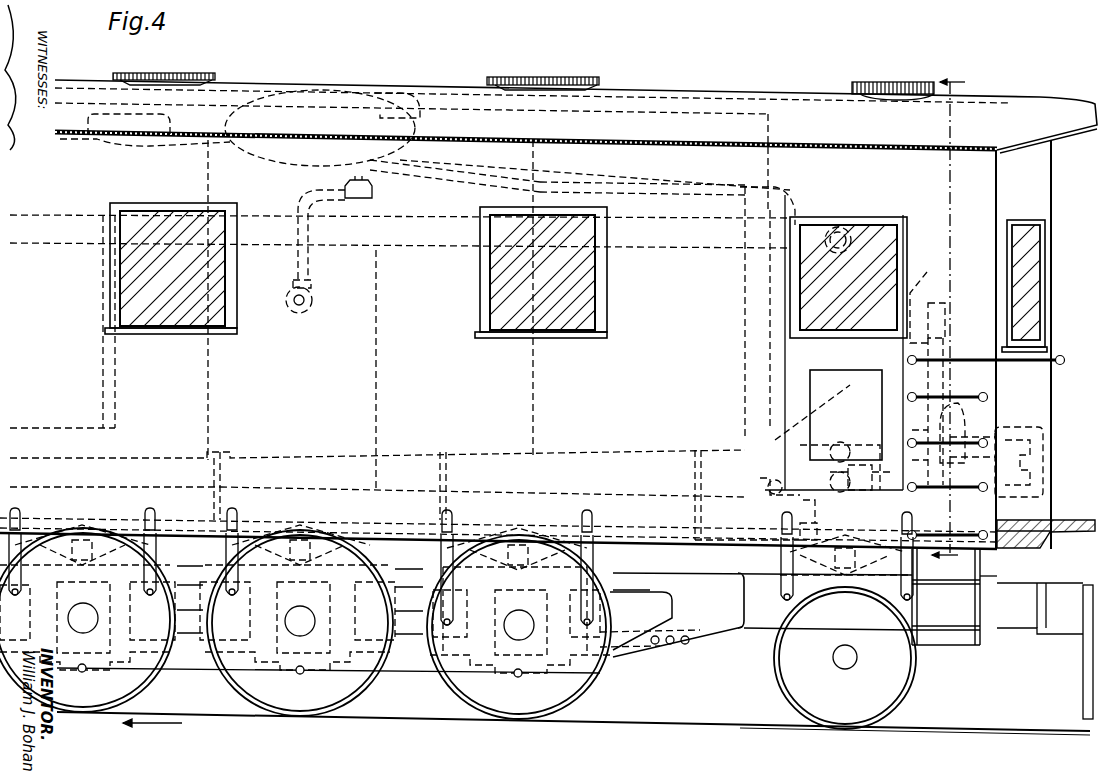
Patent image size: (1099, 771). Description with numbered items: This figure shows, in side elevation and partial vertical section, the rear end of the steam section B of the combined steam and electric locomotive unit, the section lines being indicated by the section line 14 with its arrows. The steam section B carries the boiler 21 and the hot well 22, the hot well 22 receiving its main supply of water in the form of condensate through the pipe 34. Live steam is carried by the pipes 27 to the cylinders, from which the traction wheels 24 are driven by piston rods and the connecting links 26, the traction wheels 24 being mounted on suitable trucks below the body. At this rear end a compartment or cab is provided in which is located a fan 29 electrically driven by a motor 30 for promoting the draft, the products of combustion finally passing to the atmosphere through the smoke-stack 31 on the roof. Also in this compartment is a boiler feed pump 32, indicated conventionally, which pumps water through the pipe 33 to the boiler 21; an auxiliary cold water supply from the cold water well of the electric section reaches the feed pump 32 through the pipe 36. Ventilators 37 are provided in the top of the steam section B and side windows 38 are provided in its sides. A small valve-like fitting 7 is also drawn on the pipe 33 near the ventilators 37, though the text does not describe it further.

The boiler 21 is at (52, 136).
The hot well 22 is at (695, 112).
The steam section B is at (437, 82).
The ventilators 37 is at (218, 74).
The smoke-stack 31 is at (872, 92).
The section line 14 is at (949, 317).
The pipe 34 is at (350, 95).
The valve 7 is at (359, 192).
The pipe 33 is at (318, 200).
The side windows 38 is at (365, 272).
The pipes 27 is at (676, 250).
The fan 29 is at (928, 272).
The motor 30 is at (1012, 430).
The pipe 36 is at (800, 512).
The boiler feed pump 32 is at (862, 490).
The traction wheels 24 is at (445, 687).
The connecting links 26 is at (192, 670).